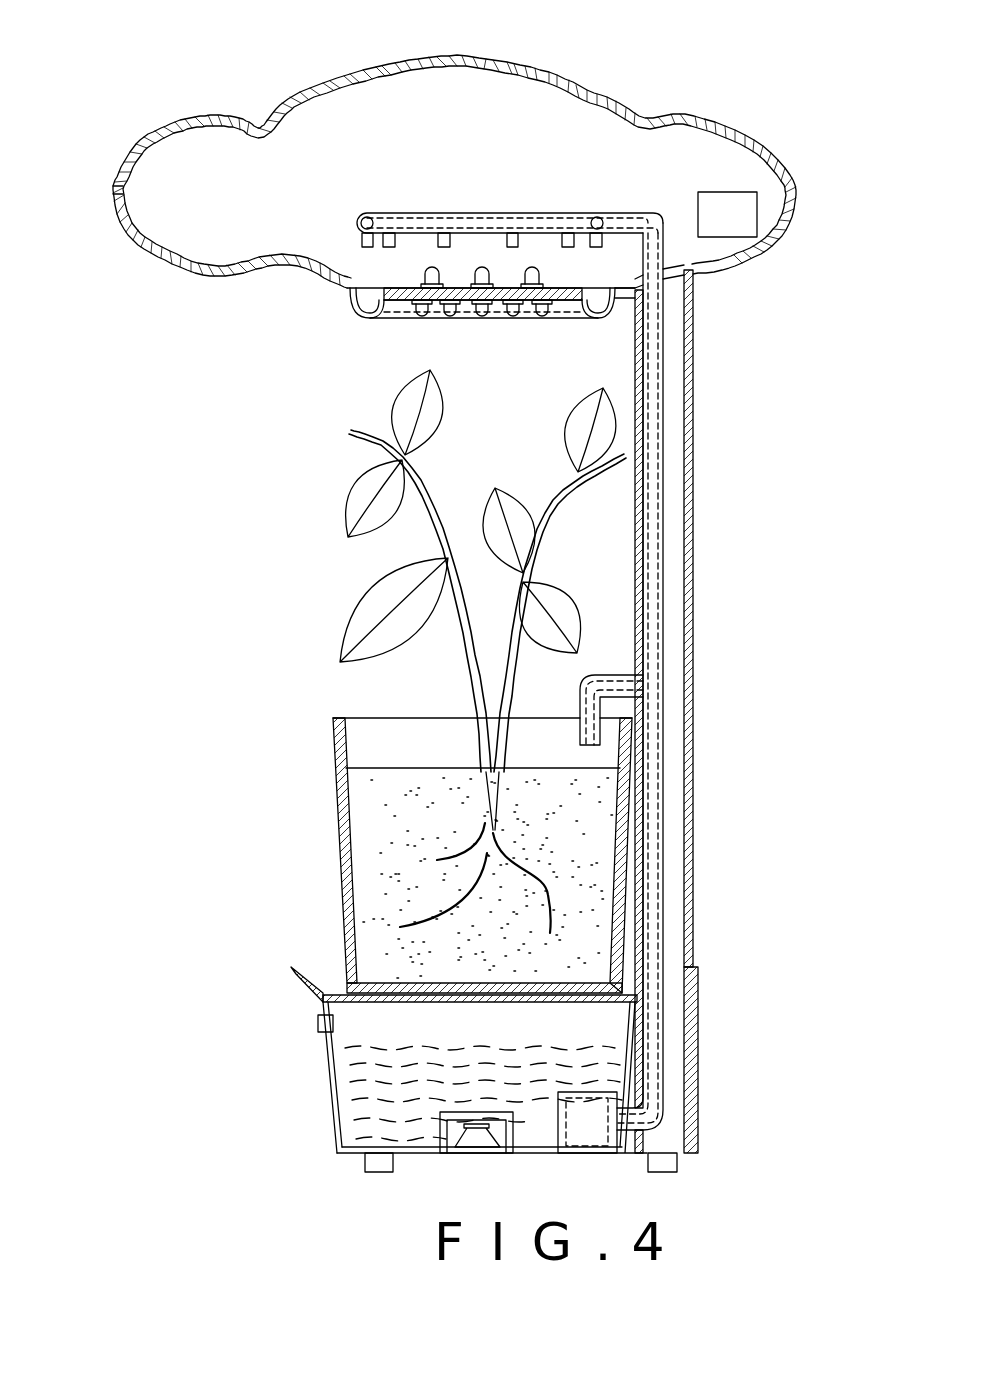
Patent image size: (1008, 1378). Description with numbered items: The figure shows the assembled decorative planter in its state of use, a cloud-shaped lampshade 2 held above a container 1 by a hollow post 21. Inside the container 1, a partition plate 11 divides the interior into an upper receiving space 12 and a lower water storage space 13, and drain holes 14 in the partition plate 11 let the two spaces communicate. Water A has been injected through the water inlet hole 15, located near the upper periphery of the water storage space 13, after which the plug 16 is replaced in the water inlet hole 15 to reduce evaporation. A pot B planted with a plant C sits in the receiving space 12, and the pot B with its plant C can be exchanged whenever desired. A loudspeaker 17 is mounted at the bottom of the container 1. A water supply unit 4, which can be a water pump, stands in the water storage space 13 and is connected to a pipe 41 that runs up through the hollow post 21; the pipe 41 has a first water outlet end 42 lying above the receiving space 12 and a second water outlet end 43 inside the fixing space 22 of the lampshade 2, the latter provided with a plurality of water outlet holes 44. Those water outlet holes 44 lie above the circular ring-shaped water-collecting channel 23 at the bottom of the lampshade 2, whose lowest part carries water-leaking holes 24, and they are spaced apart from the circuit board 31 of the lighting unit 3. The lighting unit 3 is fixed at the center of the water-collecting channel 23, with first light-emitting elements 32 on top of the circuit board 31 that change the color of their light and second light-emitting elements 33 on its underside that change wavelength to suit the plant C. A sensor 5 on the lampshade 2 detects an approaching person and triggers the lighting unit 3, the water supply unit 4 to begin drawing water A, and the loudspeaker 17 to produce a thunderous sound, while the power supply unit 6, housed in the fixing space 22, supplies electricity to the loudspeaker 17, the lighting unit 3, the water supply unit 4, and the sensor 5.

The container 1 is at (472, 1050).
The partition plate 11 is at (323, 1000).
The receiving space 12 is at (323, 982).
The water storage space 13 is at (340, 1087).
The drain holes 14 is at (373, 987).
The water inlet hole 15 is at (323, 1033).
The plug 16 is at (318, 1022).
The loudspeaker 17 is at (470, 1147).
The lampshade 2 is at (427, 162).
The hollow post 21 is at (700, 590).
The fixing space 22 is at (383, 107).
The water-collecting channel 23 is at (362, 310).
The water-leaking holes 24 is at (372, 318).
The lighting unit 3 is at (616, 361).
The circuit board 31 is at (453, 321).
The first light-emitting elements 32 is at (513, 321).
The second light-emitting elements 33 is at (550, 321).
The water supply unit 4 is at (620, 1150).
The pipe 41 is at (660, 890).
The first water outlet end 42 is at (600, 742).
The second water outlet end 43 is at (498, 213).
The water outlet holes 44 is at (360, 247).
The sensor 5 is at (115, 190).
The power supply unit 6 is at (745, 218).
The water A is at (370, 1127).
The pot B is at (340, 750).
The plant C is at (440, 505).